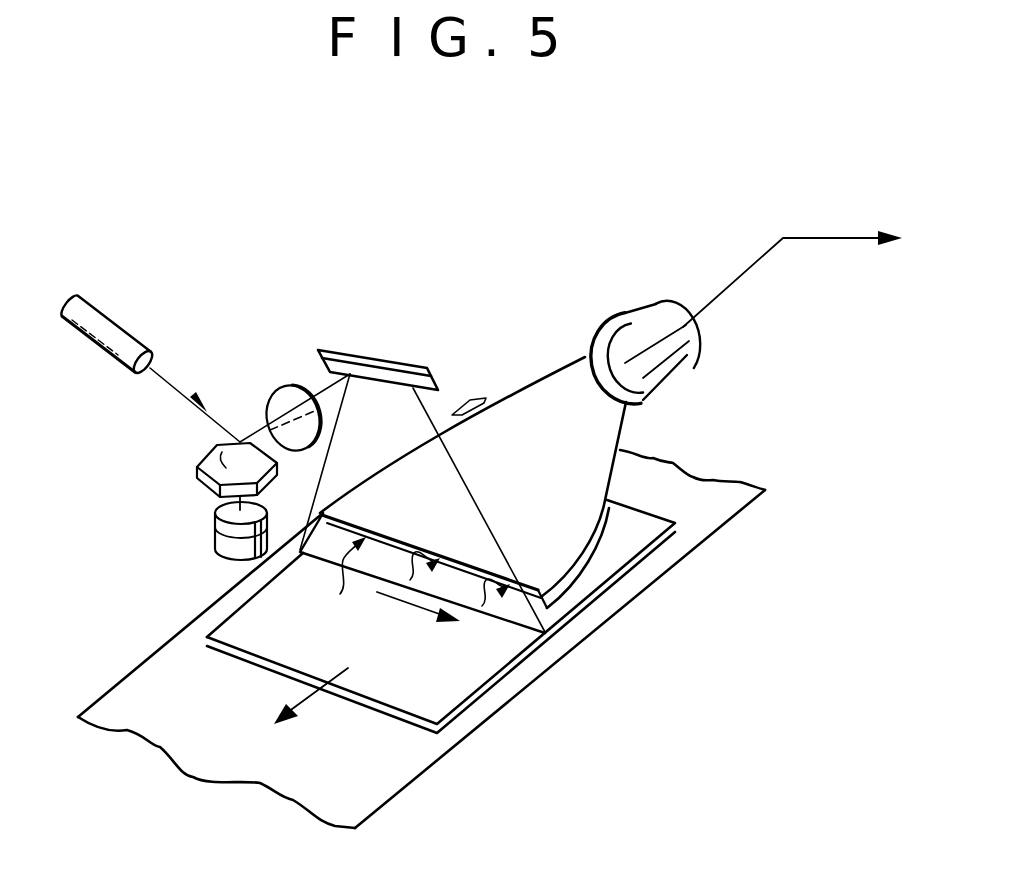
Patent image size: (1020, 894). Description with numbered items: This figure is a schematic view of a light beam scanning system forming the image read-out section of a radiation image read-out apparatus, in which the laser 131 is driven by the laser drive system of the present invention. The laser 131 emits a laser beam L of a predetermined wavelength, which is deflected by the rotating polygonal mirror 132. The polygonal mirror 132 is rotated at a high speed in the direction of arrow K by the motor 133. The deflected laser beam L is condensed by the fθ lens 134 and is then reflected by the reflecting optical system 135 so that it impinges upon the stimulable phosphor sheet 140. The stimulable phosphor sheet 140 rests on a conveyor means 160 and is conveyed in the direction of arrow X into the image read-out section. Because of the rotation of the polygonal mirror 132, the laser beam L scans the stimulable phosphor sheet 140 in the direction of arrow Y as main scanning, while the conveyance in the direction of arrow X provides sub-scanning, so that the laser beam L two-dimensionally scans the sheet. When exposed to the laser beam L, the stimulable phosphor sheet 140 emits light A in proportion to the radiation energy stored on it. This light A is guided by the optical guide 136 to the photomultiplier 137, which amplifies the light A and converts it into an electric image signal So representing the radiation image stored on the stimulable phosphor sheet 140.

The laser 131 is at (140, 335).
The rotating polygonal mirror 132 is at (198, 479).
The motor 133 is at (218, 541).
The fθ lens 134 is at (288, 388).
The reflecting optical system 135 is at (392, 362).
The optical guide 136 is at (533, 408).
The photomultiplier 137 is at (633, 310).
The stimulable phosphor sheet 140 is at (480, 688).
The conveyor means 160 is at (433, 762).
The arrow K is at (213, 461).
The laser beam L is at (474, 490).
The light A is at (423, 574).
The arrow X is at (317, 690).
The arrow Y is at (437, 603).
The electric image signal So is at (815, 237).